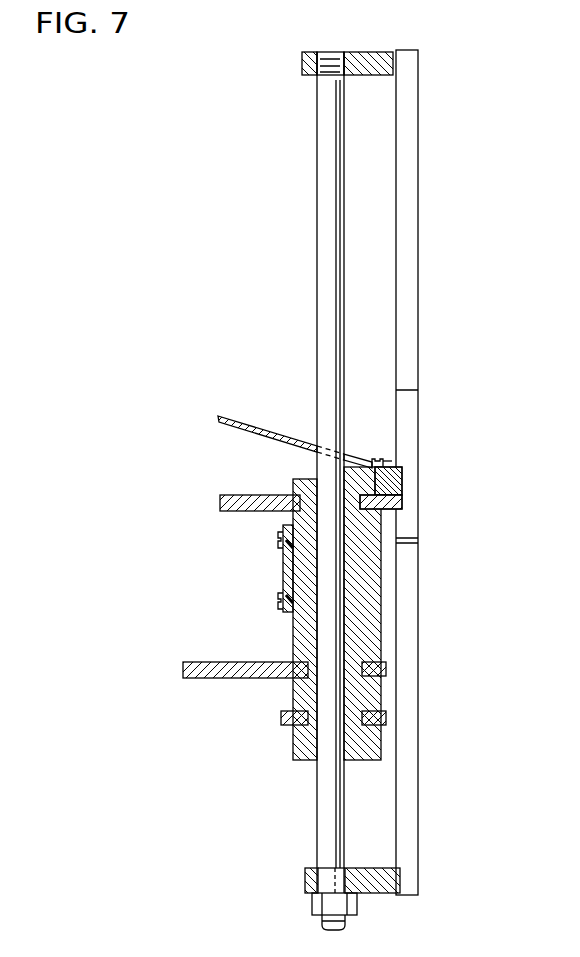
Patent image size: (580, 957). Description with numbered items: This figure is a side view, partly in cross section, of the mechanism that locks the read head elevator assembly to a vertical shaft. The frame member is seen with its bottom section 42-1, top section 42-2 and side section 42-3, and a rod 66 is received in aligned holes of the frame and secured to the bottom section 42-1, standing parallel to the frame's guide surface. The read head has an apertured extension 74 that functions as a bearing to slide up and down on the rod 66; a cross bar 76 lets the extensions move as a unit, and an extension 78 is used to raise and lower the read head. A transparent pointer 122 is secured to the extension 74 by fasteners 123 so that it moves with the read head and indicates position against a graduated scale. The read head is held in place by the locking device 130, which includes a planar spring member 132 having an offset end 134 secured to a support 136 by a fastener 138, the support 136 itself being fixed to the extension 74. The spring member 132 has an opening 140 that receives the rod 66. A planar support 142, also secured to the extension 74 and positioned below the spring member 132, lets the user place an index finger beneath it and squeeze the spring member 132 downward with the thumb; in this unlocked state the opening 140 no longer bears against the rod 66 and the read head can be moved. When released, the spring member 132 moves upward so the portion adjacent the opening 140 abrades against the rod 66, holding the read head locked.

The bottom section 42-1 is at (318, 870).
The top section 42-2 is at (367, 52).
The side section 42-3 is at (410, 210).
The rod 66 is at (322, 157).
The extension 74 is at (298, 748).
The cross bar 76 is at (280, 720).
The extension 78 is at (192, 662).
The transparent pointer 122 is at (290, 574).
The fasteners 123 is at (280, 531).
The locking device 130 is at (278, 424).
The planar spring member 132 is at (247, 432).
The offset end 134 is at (396, 463).
The support 136 is at (390, 485).
The fastener 138 is at (386, 455).
The opening 140 is at (374, 458).
The planar support 142 is at (225, 494).